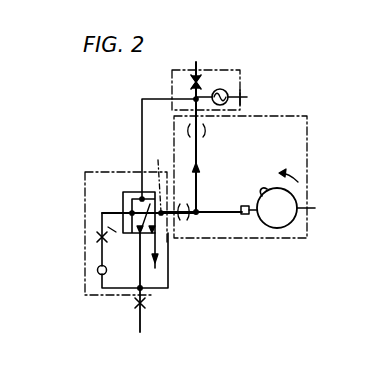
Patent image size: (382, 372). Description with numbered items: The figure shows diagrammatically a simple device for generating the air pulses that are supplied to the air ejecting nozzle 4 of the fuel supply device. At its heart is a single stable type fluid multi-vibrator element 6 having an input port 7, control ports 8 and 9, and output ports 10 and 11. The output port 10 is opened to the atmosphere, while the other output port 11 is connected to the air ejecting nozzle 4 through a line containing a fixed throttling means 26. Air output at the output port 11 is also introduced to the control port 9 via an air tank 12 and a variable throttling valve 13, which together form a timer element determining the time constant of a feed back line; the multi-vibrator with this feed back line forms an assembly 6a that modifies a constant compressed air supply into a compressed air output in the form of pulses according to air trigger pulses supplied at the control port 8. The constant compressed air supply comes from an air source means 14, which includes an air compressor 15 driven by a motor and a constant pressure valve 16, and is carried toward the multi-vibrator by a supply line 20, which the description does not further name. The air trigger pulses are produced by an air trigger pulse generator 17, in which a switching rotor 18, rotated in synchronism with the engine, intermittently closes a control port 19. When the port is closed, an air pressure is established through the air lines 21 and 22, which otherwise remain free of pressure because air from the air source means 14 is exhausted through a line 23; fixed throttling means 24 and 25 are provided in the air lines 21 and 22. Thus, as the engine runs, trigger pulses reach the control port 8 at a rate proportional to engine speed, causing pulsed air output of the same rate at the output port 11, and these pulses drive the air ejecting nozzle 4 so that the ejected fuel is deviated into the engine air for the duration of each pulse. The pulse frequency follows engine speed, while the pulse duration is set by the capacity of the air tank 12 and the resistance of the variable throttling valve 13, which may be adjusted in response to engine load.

The air ejecting nozzle 4 is at (137, 316).
The fluid multi-vibrator element 6 is at (178, 222).
The assembly 6a is at (84, 195).
The input port 7 is at (142, 196).
The control port 8 is at (154, 175).
The control port 9 is at (130, 210).
The output port 10 is at (160, 246).
The output port 11 is at (137, 241).
The air tank 12 is at (97, 270).
The variable throttling valve 13 is at (96, 237).
The air source means 14 is at (236, 68).
The air compressor 15 is at (228, 91).
The constant pressure valve 16 is at (198, 79).
The air trigger pulse generator 17 is at (306, 134).
The switching rotor 18 is at (300, 208).
The control port 19 is at (263, 226).
The feed line 20 is at (158, 99).
The air line 21 is at (198, 152).
The air line 22 is at (245, 216).
The line 23 is at (229, 211).
The fixed throttling means 24 is at (205, 130).
The fixed throttling means 25 is at (190, 220).
The fixed throttling means 26 is at (146, 300).